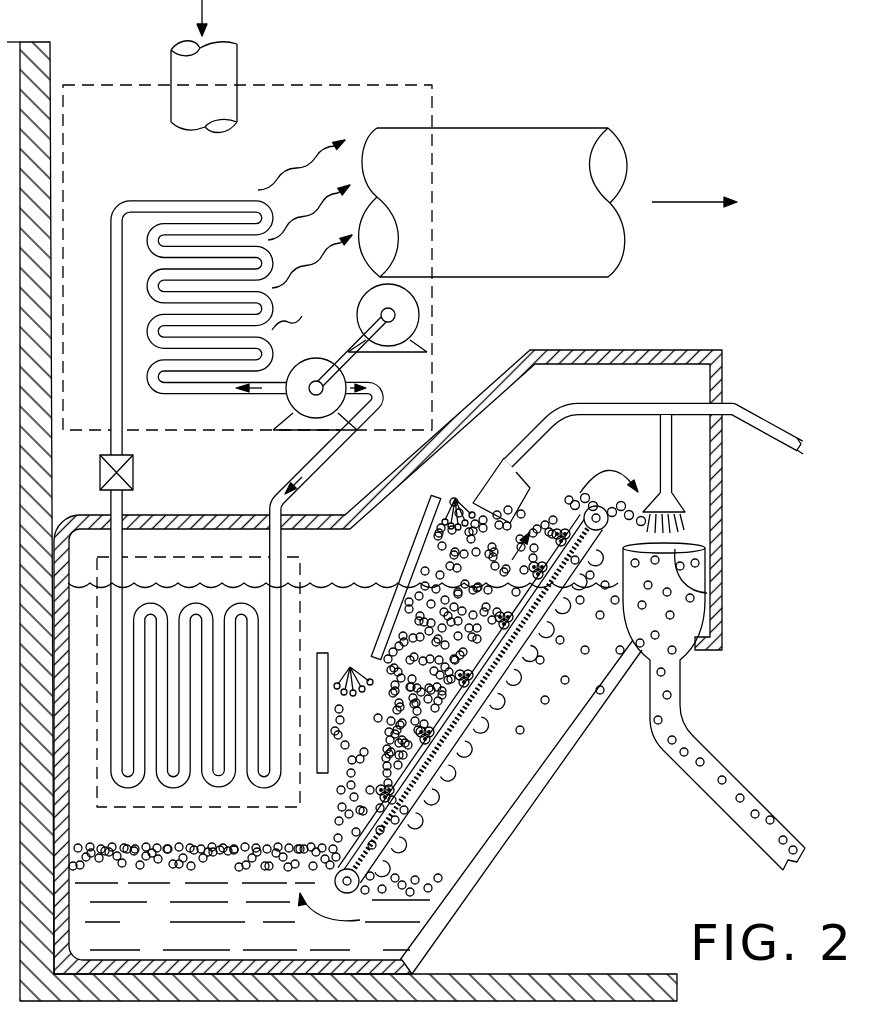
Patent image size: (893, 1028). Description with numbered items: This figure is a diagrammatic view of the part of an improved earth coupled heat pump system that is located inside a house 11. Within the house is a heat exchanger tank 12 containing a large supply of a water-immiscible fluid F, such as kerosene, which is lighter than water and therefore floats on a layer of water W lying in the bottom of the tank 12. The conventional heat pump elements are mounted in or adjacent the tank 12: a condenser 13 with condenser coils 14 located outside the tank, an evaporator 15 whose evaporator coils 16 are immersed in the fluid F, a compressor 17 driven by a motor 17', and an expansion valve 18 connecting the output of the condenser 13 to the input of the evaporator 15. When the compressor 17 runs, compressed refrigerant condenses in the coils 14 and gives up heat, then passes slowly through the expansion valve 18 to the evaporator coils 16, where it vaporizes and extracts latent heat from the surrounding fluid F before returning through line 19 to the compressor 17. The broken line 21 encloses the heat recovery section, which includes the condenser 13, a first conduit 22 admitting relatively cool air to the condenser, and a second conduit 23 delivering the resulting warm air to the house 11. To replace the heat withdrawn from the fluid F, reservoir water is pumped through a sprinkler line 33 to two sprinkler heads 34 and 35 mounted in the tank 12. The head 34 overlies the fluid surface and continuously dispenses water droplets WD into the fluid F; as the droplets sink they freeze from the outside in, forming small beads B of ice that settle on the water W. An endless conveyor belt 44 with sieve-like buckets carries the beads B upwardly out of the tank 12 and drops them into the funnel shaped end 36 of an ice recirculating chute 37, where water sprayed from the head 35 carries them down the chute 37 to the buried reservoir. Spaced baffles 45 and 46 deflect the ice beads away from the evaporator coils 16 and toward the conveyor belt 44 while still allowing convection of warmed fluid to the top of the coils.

The house 11 is at (56, 74).
The heat exchanger tank 12 is at (466, 887).
The condenser 13 is at (144, 189).
The condenser coils 14 is at (265, 212).
The evaporator 15 is at (181, 814).
The evaporator coils 16 is at (237, 607).
The compressor 17 is at (376, 386).
The motor 17' is at (435, 318).
The expansion valve 18 is at (133, 481).
The line 19 is at (283, 509).
The heat recovery section 21 is at (440, 112).
The first conduit 22 is at (227, 74).
The second conduit 23 is at (497, 138).
The sprinkler line 33 is at (771, 425).
The sprinkler head 34 is at (505, 501).
The sprinkler head 35 is at (686, 499).
The funnel shaped end 36 is at (698, 593).
The ice recirculating chute 37 is at (737, 784).
The endless conveyor belt 44 is at (566, 499).
The baffle 45 is at (386, 601).
The baffle 46 is at (320, 652).
The water layer W is at (155, 937).
The water droplets WD is at (460, 499).
The beads of ice B is at (353, 667).
The water-immiscible fluid F is at (349, 578).